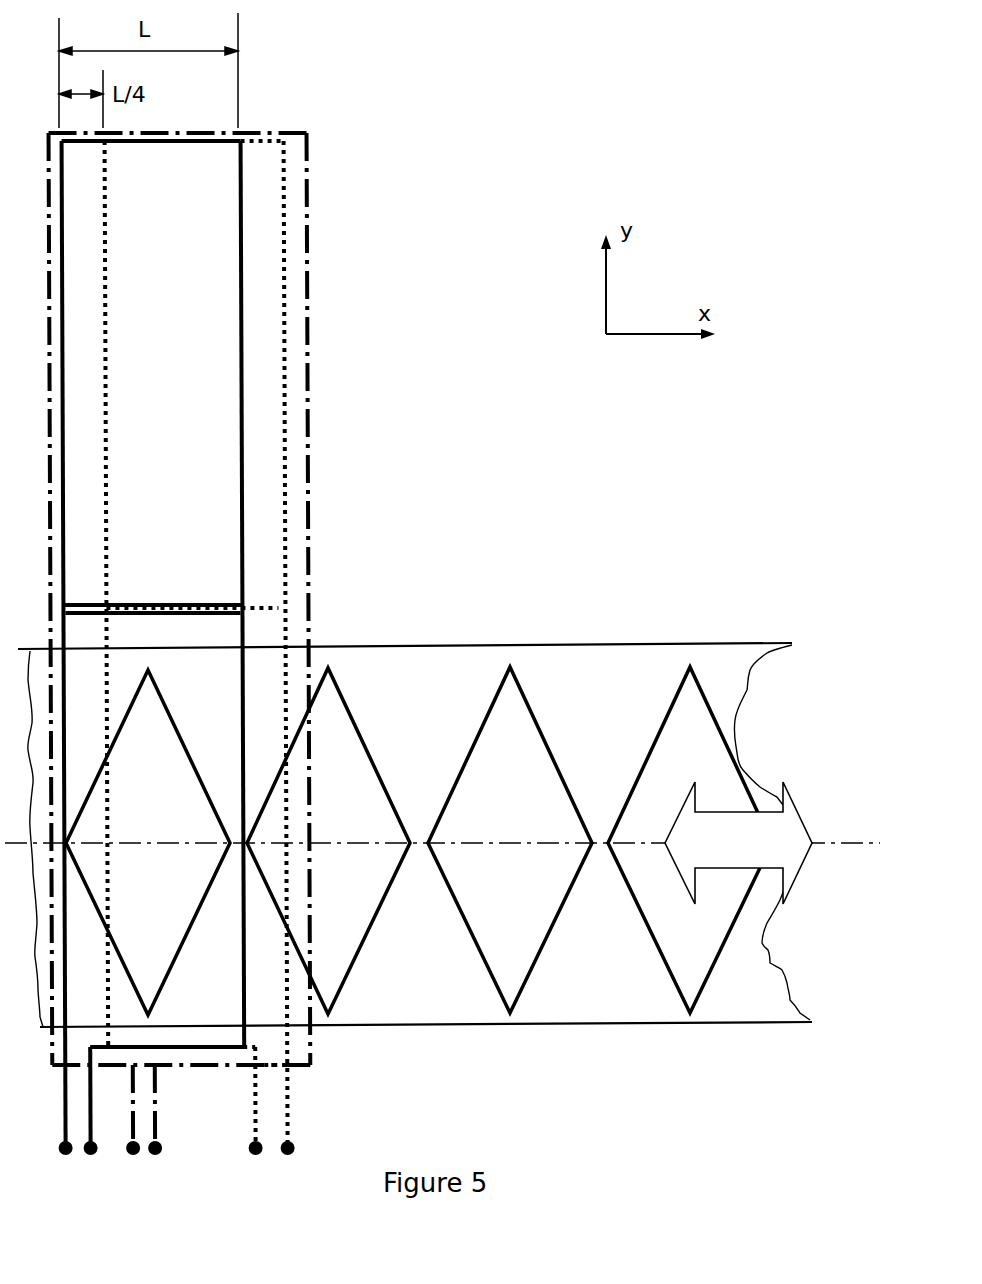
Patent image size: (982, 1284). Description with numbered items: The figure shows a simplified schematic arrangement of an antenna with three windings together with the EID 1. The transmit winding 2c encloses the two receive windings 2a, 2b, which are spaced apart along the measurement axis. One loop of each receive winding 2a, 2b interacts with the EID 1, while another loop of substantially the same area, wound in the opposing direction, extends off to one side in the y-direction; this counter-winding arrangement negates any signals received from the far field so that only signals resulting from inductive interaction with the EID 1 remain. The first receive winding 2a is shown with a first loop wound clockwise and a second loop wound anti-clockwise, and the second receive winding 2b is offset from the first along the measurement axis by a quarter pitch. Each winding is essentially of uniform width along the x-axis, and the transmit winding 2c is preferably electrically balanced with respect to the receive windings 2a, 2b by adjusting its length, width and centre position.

The EID 1 is at (607, 678).
The first receive winding 2a is at (83, 637).
The second receive winding 2b is at (258, 630).
The transmit winding 2c is at (312, 628).